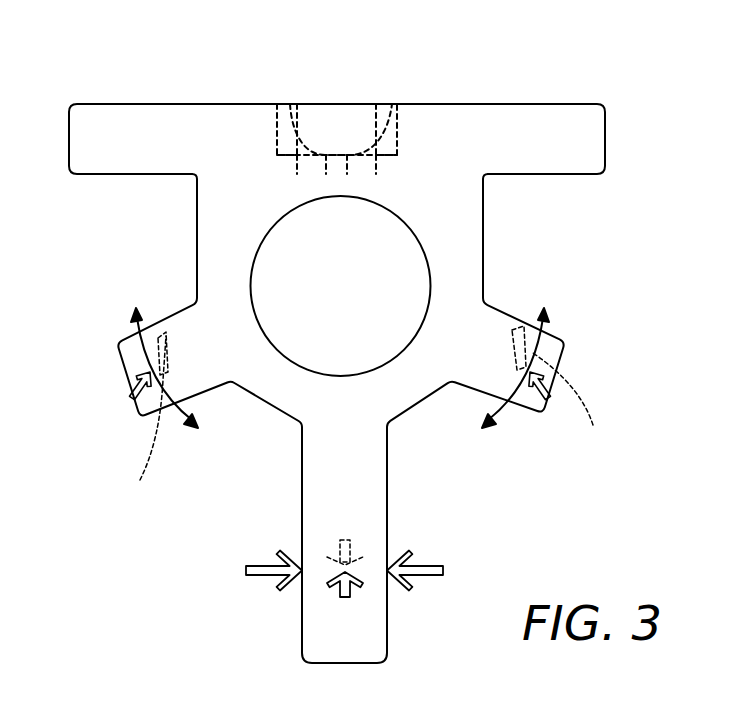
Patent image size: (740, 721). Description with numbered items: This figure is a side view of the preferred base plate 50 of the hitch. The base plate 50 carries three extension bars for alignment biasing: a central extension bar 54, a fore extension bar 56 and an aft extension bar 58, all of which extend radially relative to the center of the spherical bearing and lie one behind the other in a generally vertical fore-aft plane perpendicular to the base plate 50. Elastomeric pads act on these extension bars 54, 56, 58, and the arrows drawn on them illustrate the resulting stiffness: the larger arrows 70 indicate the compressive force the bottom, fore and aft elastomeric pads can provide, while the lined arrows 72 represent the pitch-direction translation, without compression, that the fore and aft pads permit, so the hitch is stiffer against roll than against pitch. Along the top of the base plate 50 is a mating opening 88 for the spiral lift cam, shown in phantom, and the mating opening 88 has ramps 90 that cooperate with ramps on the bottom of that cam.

The base plate 50 is at (123, 120).
The central extension bar 54 is at (313, 645).
The fore extension bar 56 is at (127, 367).
The aft extension bar 58 is at (567, 360).
The larger arrows 70 is at (130, 396).
The lined arrows 72 is at (128, 345).
The mating opening 88 is at (337, 118).
The ramps 90 is at (297, 137).